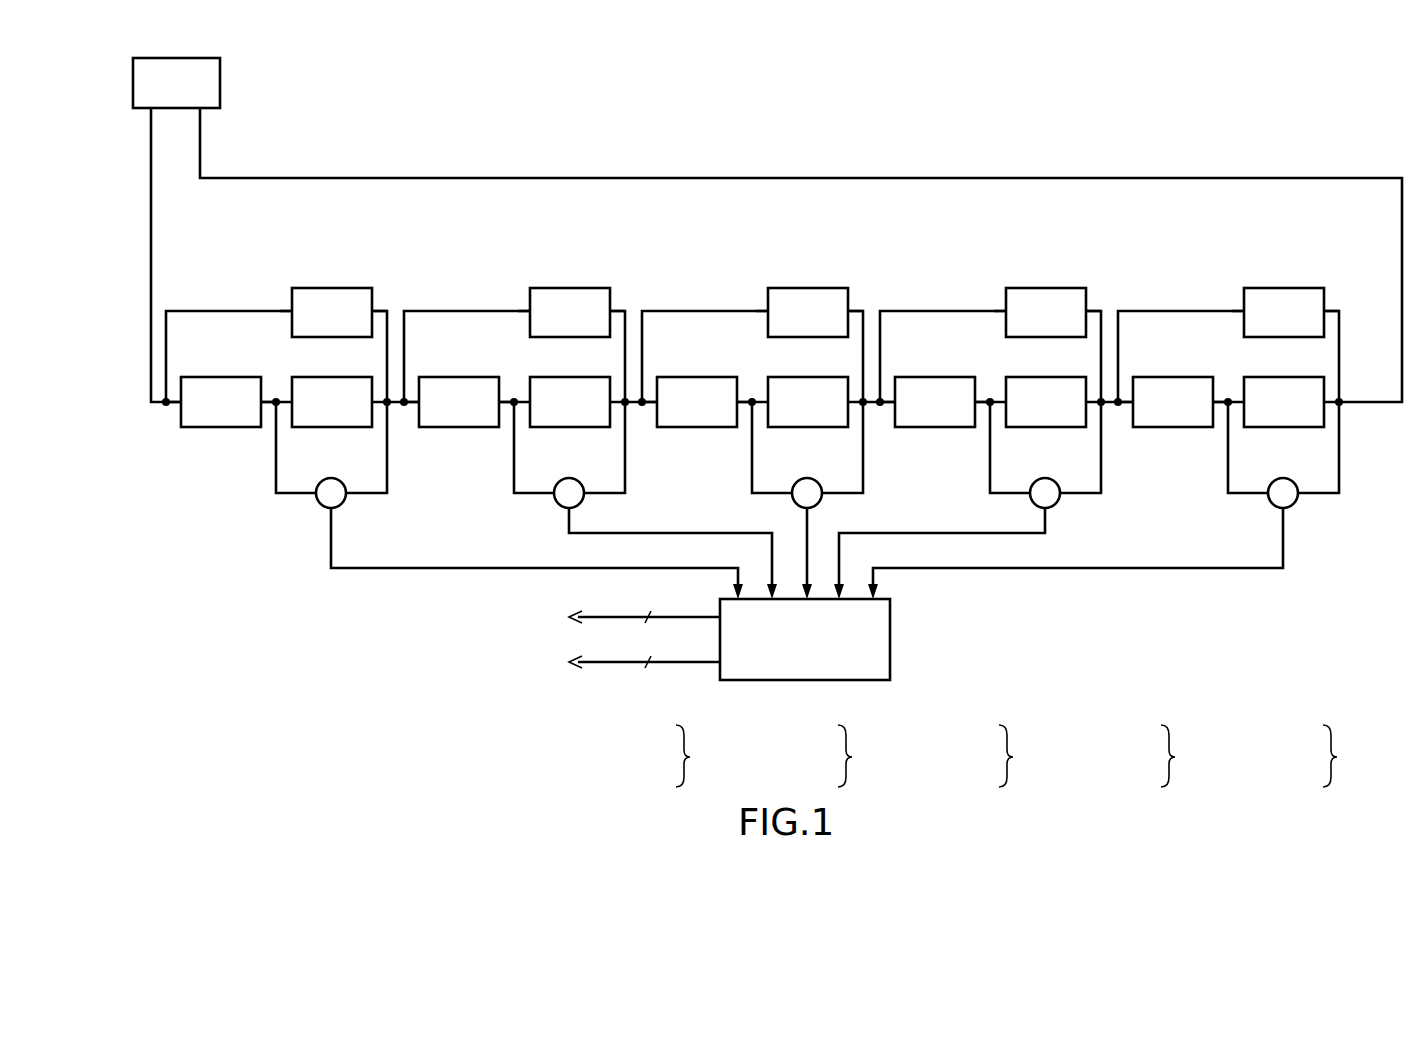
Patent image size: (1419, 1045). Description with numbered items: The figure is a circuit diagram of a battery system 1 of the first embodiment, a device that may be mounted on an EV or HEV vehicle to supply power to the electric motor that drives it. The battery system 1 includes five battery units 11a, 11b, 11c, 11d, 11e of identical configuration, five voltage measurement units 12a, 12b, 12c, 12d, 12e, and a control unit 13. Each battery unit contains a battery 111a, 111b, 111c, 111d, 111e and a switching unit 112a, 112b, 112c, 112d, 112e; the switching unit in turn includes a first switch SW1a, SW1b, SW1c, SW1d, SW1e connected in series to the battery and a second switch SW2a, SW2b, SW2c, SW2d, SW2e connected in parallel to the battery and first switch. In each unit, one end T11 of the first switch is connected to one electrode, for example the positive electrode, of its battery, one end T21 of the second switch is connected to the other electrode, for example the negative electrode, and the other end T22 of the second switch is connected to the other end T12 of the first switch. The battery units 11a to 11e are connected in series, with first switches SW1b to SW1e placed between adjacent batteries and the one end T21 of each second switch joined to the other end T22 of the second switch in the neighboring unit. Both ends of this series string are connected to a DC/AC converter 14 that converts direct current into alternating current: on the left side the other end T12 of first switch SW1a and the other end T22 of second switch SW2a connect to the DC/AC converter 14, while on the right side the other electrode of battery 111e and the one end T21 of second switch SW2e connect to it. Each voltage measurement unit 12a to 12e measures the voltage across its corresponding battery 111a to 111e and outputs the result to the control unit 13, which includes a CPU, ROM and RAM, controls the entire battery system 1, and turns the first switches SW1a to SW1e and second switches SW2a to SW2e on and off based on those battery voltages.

The battery system 1 is at (767, 409).
The DC/AC converter 14 is at (172, 58).
The battery unit 11a is at (452, 398).
The battery unit 11b is at (588, 398).
The battery unit 11c is at (769, 398).
The battery unit 11d is at (987, 398).
The battery unit 11e is at (1123, 398).
The first switch SW1a is at (190, 377).
The first switch SW1b is at (428, 377).
The first switch SW1c is at (666, 377).
The first switch SW1d is at (904, 377).
The first switch SW1e is at (1142, 377).
The second switch SW2a is at (298, 288).
The second switch SW2b is at (536, 288).
The second switch SW2c is at (774, 288).
The second switch SW2d is at (1012, 288).
The second switch SW2e is at (1250, 288).
The battery 111a is at (300, 377).
The battery 111b is at (538, 377).
The battery 111c is at (776, 377).
The battery 111d is at (1014, 377).
The battery 111e is at (1252, 377).
The voltage measurement unit 12a is at (331, 478).
The voltage measurement unit 12b is at (569, 478).
The voltage measurement unit 12c is at (807, 478).
The voltage measurement unit 12d is at (1045, 478).
The voltage measurement unit 12e is at (1283, 478).
The one end of the first switch T11 is at (1206, 456).
The other end of the first switch T12 is at (1140, 456).
The one end of the second switch T21 is at (1349, 292).
The other end of the second switch T22 is at (1244, 311).
The control unit 13 is at (890, 637).
The switching unit 112a is at (675, 756).
The switching unit 112b is at (838, 756).
The switching unit 112c is at (998, 756).
The switching unit 112d is at (1161, 756).
The switching unit 112e is at (1322, 756).